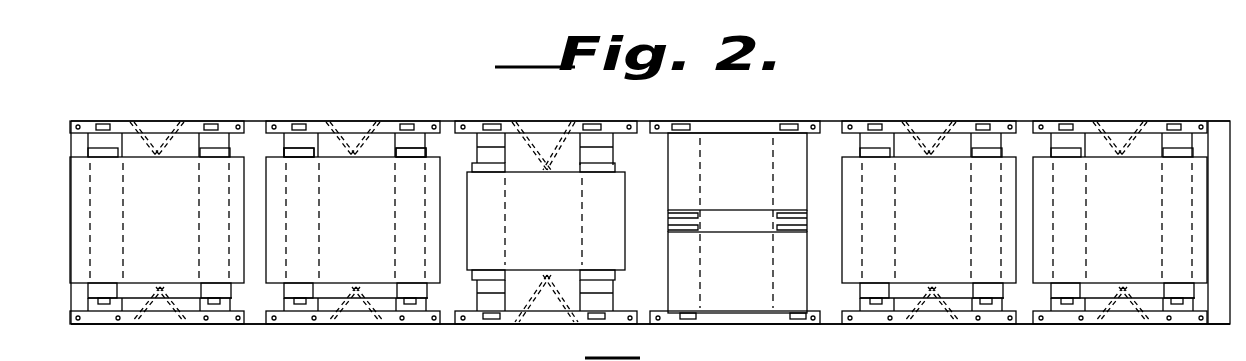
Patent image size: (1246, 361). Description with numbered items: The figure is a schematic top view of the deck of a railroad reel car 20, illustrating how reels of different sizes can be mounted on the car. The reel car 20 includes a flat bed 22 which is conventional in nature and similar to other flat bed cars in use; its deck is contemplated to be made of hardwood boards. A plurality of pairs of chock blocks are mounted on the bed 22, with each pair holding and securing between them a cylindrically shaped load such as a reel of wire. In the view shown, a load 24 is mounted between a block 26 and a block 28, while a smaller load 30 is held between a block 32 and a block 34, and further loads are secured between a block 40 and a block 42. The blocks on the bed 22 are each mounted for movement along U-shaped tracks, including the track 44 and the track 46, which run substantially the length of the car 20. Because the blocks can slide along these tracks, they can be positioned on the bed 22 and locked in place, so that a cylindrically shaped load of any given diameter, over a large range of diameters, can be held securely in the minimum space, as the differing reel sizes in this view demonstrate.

The reel car 20 is at (921, 72).
The flat bed 22 is at (833, 313).
The load 24 is at (428, 280).
The block 26 is at (417, 142).
The block 28 is at (288, 140).
The smaller load 30 is at (562, 201).
The block 32 is at (607, 152).
The block 34 is at (490, 295).
The block 40 is at (683, 285).
The block 42 is at (683, 186).
The U-shaped track 44 is at (690, 322).
The U-shaped track 46 is at (803, 323).